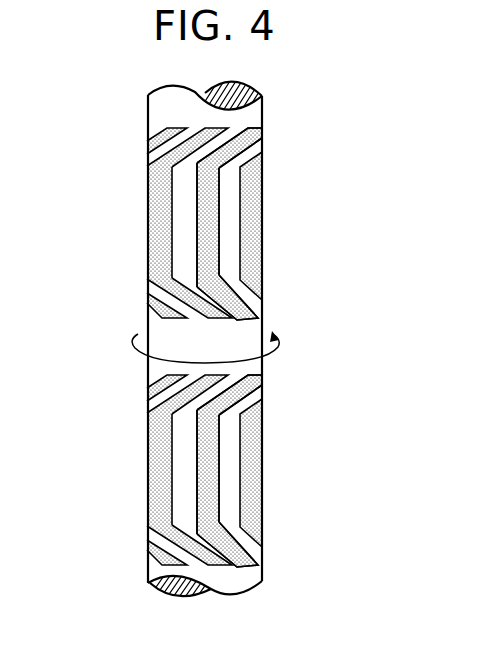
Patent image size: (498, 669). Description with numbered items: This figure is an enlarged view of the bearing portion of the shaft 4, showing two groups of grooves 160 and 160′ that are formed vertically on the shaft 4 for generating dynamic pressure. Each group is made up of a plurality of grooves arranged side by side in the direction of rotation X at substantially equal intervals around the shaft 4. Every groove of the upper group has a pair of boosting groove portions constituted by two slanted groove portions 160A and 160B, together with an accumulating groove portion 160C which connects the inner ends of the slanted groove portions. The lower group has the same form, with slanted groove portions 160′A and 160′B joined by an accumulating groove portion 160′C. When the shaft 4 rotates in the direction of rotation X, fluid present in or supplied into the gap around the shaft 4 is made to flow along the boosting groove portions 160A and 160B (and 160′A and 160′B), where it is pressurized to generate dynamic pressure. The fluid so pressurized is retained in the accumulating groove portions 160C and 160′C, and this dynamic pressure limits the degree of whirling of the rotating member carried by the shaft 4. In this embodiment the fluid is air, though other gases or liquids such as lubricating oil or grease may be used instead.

The shaft 4 is at (148, 113).
The groove 160 is at (222, 202).
The slanted groove portion 160A is at (245, 147).
The slanted groove portion 160B is at (245, 302).
The accumulating groove portion 160C is at (205, 237).
The groove 160′ is at (224, 458).
The slanted groove portion 160′A is at (253, 391).
The slanted groove portion 160′B is at (238, 550).
The accumulating groove portion 160′C is at (207, 497).
The direction of rotation X is at (280, 350).